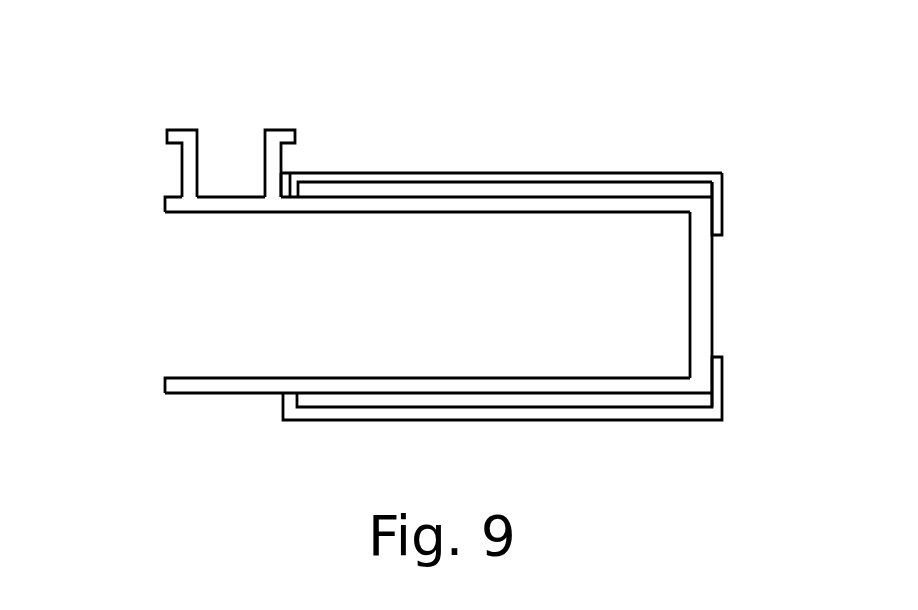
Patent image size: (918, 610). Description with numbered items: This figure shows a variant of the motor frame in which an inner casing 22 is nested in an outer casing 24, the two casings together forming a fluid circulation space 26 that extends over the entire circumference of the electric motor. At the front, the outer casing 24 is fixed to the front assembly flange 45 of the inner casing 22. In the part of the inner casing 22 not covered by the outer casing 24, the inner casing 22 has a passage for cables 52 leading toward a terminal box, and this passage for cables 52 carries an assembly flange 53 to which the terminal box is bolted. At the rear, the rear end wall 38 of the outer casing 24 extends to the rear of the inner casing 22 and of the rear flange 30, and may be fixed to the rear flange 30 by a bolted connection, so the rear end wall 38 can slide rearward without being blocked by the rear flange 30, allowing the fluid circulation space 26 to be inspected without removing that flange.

The inner casing 22 is at (468, 200).
The outer casing 24 is at (615, 173).
The fluid circulation space 26 is at (652, 397).
The rear flange 30 is at (707, 298).
The rear end wall 38 is at (722, 204).
The front assembly flange 45 is at (288, 182).
The passage for cables 52 is at (190, 160).
The assembly flange 53 is at (296, 133).